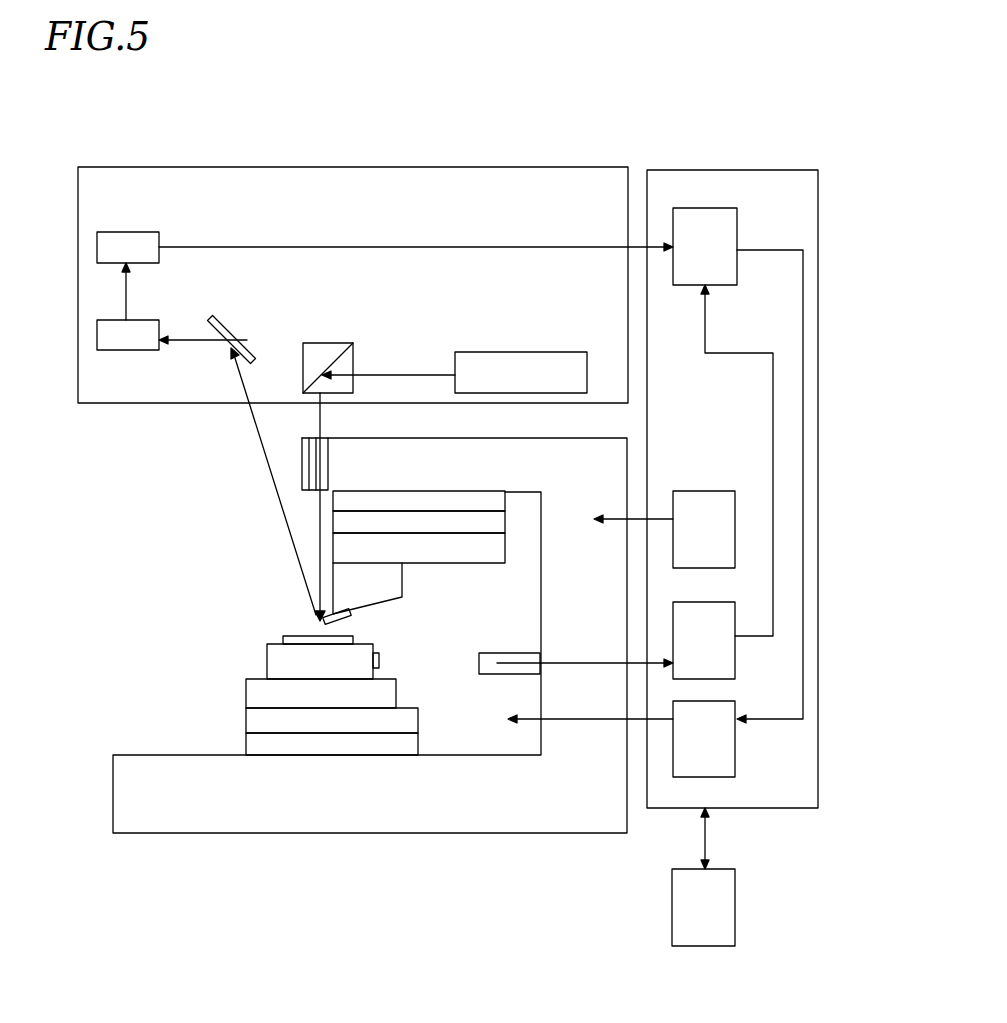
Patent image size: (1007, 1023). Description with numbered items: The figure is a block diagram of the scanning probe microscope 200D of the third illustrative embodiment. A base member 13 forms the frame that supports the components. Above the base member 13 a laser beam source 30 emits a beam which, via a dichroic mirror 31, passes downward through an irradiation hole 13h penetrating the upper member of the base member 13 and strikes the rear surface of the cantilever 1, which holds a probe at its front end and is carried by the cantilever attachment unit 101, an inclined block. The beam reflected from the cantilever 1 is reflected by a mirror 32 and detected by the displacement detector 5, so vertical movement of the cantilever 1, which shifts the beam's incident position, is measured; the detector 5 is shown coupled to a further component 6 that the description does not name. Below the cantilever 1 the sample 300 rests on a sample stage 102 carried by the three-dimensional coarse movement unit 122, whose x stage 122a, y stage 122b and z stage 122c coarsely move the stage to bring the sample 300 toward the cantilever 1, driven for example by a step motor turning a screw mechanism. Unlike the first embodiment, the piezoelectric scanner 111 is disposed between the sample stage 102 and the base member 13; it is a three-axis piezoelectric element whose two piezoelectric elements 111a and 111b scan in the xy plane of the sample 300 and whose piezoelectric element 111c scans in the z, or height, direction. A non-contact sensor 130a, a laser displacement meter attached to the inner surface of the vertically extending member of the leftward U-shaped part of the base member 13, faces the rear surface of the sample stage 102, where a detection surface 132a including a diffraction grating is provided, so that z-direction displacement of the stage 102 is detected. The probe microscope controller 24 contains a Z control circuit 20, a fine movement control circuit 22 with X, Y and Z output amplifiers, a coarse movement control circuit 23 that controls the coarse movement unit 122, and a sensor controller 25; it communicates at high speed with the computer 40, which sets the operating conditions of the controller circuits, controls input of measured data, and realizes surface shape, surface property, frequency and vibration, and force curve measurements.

The scanning probe microscope 200D is at (692, 120).
The cantilever 1 is at (345, 622).
The displacement detector 5 is at (159, 326).
The image processing unit 6 is at (159, 240).
The base member 13 is at (370, 651).
The irradiation hole 13h is at (318, 437).
The Z control circuit 20 is at (737, 220).
The fine movement control circuit 22 is at (733, 701).
The coarse movement control circuit 23 is at (690, 491).
The probe microscope controller 24 is at (780, 170).
The sensor controller 25 is at (708, 602).
The laser beam source 30 is at (497, 352).
The dichroic mirror 31 is at (353, 353).
The mirror 32 is at (241, 340).
The control unit (computer) 40 is at (735, 890).
The cantilever attachment unit 101 is at (402, 578).
The sample stage 102 is at (267, 648).
The piezoelectric scanner 111 is at (296, 704).
The piezoelectric element 111a is at (246, 688).
The piezoelectric element 111b is at (246, 716).
The piezoelectric element 111c is at (246, 743).
The three-dimensional coarse movement unit 122 is at (390, 514).
The x stage 122a is at (333, 498).
The y stage 122b is at (340, 522).
The z stage 122c is at (340, 546).
The non-contact sensor 130a is at (492, 653).
The detection surface 132a is at (380, 660).
The sample 300 is at (285, 634).